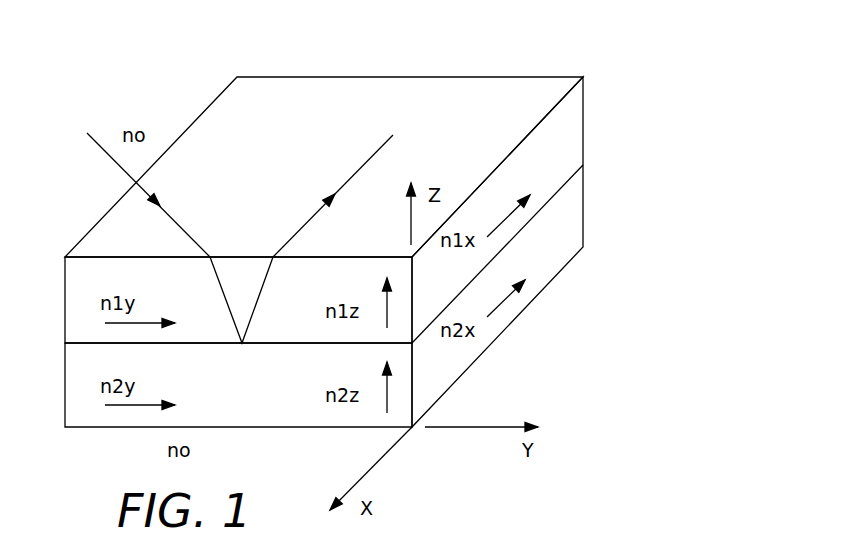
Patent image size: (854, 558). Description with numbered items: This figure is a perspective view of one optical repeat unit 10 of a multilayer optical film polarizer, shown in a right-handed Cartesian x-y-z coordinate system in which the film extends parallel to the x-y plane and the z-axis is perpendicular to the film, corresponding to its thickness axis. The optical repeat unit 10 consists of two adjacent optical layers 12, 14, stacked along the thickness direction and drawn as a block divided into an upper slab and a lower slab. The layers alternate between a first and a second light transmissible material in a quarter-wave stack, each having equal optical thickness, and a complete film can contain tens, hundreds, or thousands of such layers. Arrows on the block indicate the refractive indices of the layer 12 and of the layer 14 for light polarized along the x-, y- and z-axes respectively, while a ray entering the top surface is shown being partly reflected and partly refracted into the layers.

The optical repeat unit 10 is at (359, 213).
The optical layer 12 is at (583, 120).
The optical layer 14 is at (583, 212).